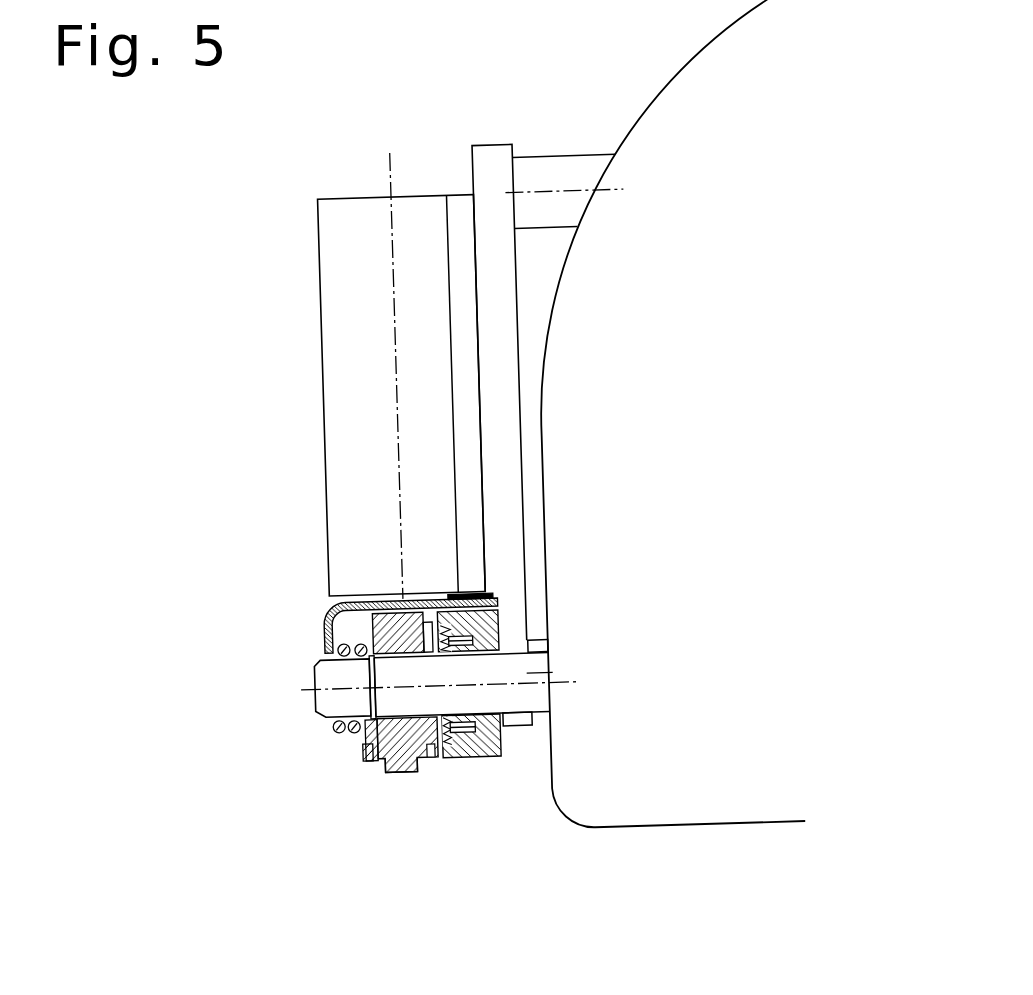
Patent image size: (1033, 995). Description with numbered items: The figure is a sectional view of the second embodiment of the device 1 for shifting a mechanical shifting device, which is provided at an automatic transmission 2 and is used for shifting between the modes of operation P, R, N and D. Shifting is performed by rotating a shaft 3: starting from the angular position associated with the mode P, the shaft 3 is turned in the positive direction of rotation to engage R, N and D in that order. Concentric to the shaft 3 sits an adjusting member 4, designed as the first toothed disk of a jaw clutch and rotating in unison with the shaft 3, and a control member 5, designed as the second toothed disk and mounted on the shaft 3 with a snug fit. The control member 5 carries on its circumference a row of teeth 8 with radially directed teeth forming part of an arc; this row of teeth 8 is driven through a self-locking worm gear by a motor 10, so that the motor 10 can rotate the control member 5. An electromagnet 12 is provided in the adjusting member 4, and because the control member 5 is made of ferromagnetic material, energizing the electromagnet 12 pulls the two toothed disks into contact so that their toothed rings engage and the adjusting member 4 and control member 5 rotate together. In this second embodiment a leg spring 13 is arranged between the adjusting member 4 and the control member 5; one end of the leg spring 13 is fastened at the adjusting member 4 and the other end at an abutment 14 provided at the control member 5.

The device for shifting a mechanical shifting device 1 is at (215, 236).
The automatic transmission 2 is at (648, 786).
The shaft 3 is at (334, 697).
The adjusting member 4 is at (485, 748).
The control member 5 is at (384, 754).
The row of teeth 8 is at (403, 767).
The motor 10 is at (378, 366).
The electromagnet 12 is at (465, 726).
The leg spring 13 is at (327, 732).
The abutment 14 is at (360, 754).